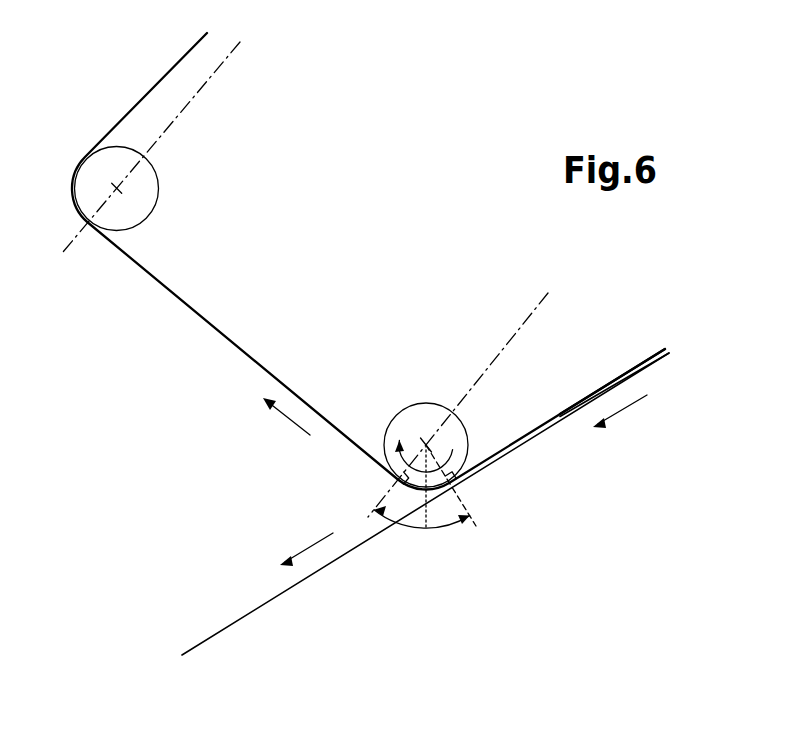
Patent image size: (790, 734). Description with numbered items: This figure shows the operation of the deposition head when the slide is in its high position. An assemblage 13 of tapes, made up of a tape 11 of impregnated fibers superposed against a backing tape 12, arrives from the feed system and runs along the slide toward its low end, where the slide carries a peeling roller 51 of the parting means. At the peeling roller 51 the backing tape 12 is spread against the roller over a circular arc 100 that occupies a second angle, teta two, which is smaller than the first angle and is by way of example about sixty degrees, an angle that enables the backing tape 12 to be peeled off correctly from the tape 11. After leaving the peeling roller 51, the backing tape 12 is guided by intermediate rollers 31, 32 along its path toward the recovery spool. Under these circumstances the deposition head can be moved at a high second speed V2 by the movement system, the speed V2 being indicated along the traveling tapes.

The tape of impregnated fibers 11 is at (215, 630).
The backing tape 12 is at (182, 301).
The assemblage of tapes 13 is at (630, 350).
The intermediate roller 31 is at (171, 147).
The intermediate roller 32 is at (158, 182).
The peeling roller 51 is at (438, 404).
The circular arc 100 is at (437, 493).
The second speed V2 is at (462, 480).